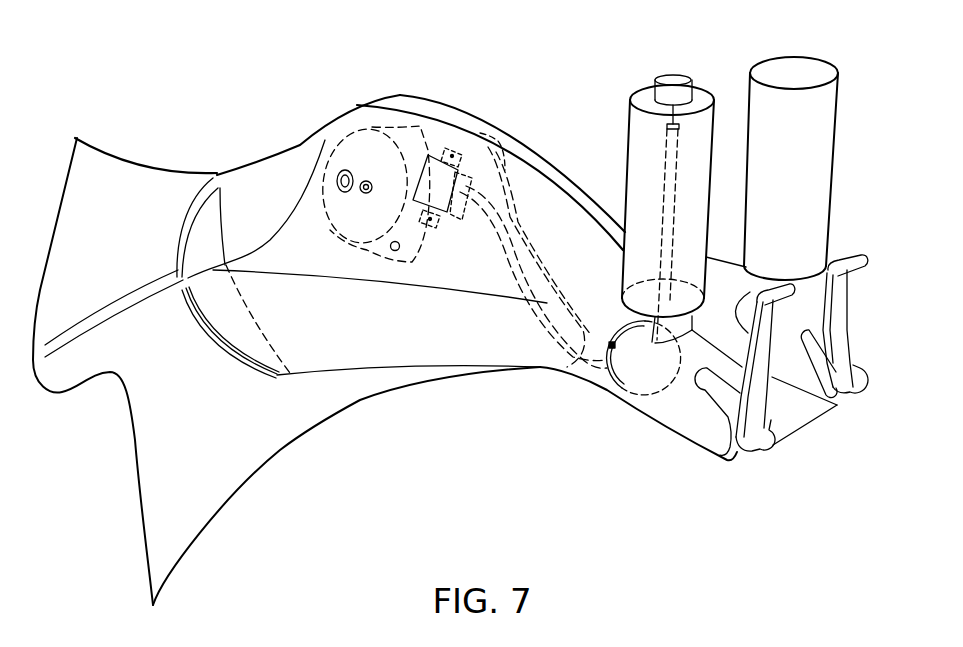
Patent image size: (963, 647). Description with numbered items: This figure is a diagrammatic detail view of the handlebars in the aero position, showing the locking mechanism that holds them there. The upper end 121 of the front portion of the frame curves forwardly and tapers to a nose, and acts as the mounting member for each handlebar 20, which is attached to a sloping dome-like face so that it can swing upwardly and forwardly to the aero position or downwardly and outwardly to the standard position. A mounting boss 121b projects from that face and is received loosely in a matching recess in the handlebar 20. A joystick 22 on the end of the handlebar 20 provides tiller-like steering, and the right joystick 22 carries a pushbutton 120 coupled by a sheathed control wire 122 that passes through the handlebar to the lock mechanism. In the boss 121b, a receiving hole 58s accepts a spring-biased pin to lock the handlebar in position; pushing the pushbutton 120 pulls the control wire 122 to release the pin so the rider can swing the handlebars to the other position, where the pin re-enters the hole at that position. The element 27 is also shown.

The handlebar 20 is at (460, 100).
The joystick 22 is at (628, 128).
The cartridge retaining clip 27 is at (848, 318).
The receiving hole 58s is at (397, 251).
The pushbutton 120 is at (670, 72).
The upper end of the front portion of the frame 121 is at (133, 158).
The mounting boss 121b is at (367, 128).
The control wire 122 is at (547, 348).